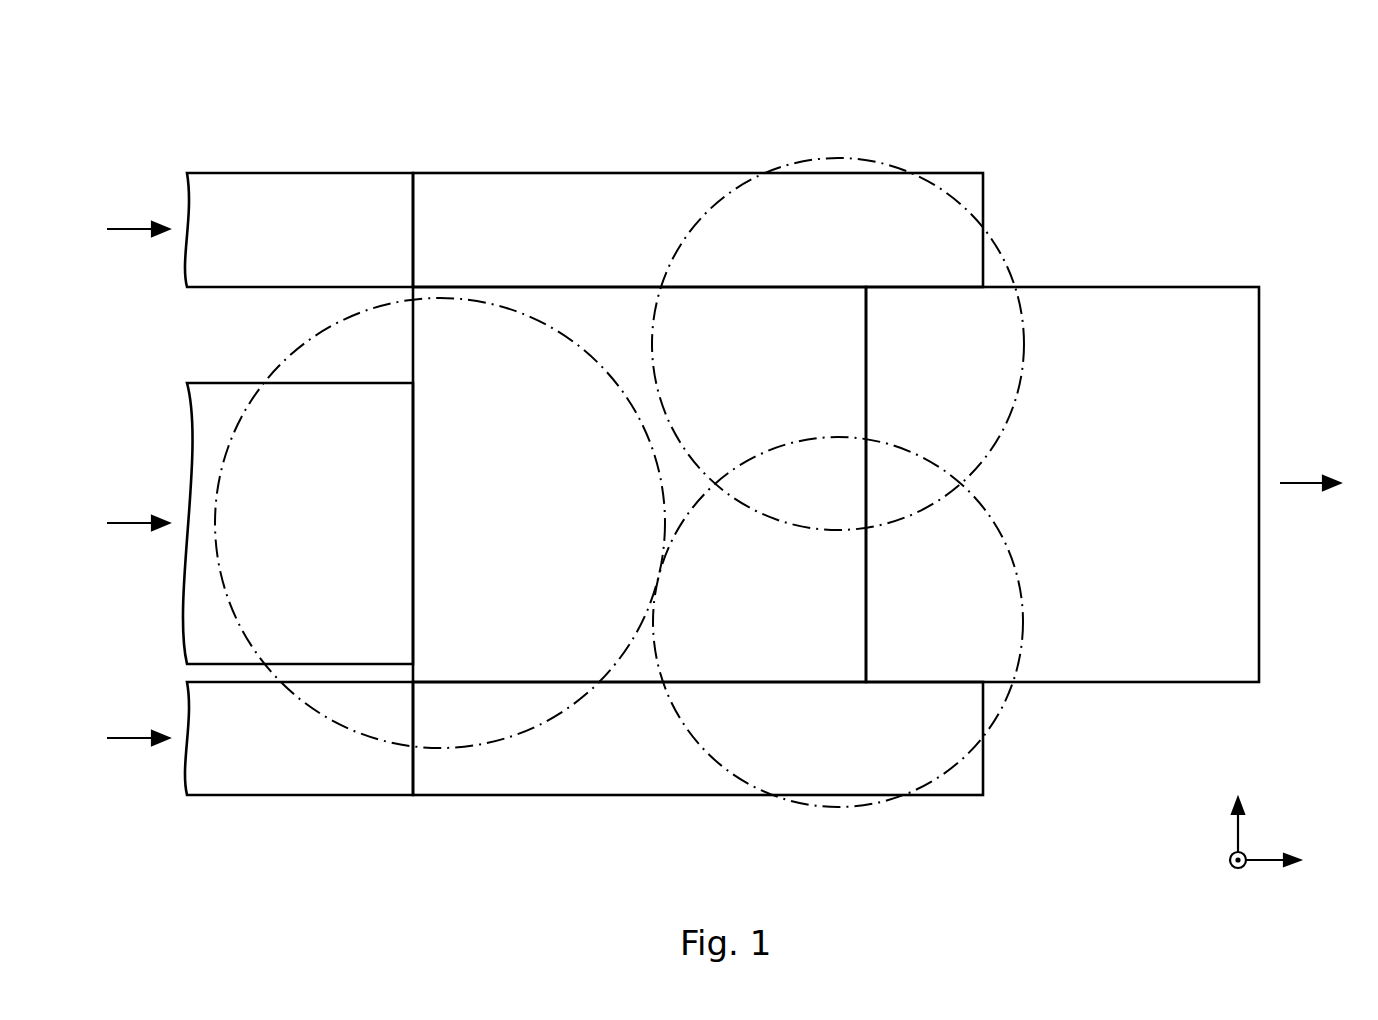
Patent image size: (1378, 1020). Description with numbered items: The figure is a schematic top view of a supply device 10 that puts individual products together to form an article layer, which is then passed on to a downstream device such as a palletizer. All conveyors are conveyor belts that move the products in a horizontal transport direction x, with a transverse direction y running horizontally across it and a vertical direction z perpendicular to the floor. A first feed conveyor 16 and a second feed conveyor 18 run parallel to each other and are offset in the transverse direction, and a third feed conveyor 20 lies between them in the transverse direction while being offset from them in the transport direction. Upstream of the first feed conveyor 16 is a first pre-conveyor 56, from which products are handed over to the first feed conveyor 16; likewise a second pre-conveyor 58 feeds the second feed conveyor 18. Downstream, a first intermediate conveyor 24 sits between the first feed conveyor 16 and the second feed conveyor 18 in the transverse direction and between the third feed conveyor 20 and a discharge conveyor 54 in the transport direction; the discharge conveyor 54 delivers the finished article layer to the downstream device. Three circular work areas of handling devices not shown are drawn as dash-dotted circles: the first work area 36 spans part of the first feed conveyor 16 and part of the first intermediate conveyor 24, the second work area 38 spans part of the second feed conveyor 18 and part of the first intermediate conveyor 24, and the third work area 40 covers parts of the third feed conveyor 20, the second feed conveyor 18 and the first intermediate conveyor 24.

The supply device 10 is at (1275, 196).
The first feed conveyor 16 is at (577, 194).
The second feed conveyor 18 is at (588, 775).
The third feed conveyor 20 is at (216, 405).
The first intermediate conveyor 24 is at (612, 320).
The first work area 36 is at (1013, 419).
The second work area 38 is at (999, 718).
The third work area 40 is at (598, 689).
The discharge conveyor 54 is at (1124, 305).
The first pre-conveyor 56 is at (294, 194).
The second pre-conveyor 58 is at (302, 775).